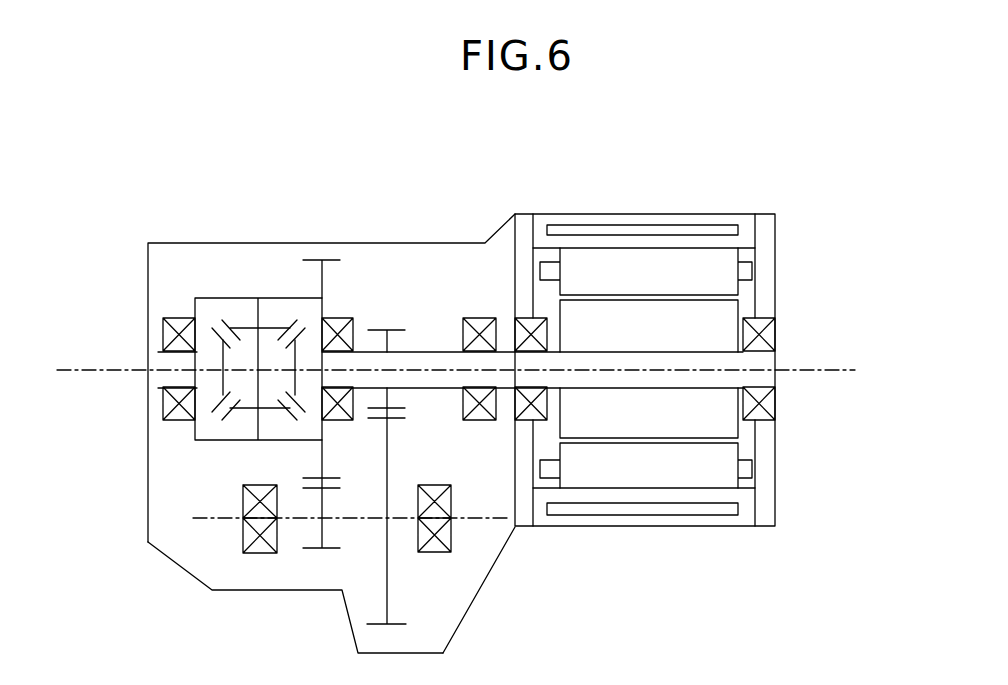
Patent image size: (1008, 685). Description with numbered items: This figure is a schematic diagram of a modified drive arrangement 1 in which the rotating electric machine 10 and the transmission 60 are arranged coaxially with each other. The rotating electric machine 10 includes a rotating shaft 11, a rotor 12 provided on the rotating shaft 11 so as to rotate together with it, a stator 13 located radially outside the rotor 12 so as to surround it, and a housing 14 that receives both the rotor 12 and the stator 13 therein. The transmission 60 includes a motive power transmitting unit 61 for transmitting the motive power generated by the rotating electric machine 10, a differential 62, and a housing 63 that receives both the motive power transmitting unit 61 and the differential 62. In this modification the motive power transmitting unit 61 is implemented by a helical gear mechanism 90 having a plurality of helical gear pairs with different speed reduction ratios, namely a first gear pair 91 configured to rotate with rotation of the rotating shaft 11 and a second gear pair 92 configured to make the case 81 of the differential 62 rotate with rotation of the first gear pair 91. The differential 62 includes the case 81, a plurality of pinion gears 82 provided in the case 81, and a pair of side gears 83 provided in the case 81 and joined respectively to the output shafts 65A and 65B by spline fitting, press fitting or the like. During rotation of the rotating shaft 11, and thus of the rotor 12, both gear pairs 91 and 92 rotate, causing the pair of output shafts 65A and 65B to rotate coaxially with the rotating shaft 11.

The drive unit 1 is at (782, 156).
The rotating electric machine 10 is at (680, 207).
The rotating shaft 11 is at (608, 388).
The rotor 12 is at (648, 438).
The stator 13 is at (705, 492).
The housing 14 is at (728, 214).
The transmission 60 is at (267, 230).
The motive power transmitting unit 61 is at (339, 414).
The helical gear mechanism 90 is at (424, 287).
The differential 62 is at (224, 267).
The housing 63 is at (485, 577).
The output shaft 65A is at (820, 368).
The output shaft 65B is at (103, 368).
The case 81 is at (235, 412).
The pinion gears 82 is at (247, 405).
The side gears 83 is at (232, 393).
The first gear pair 91 is at (385, 601).
The second gear pair 92 is at (317, 530).